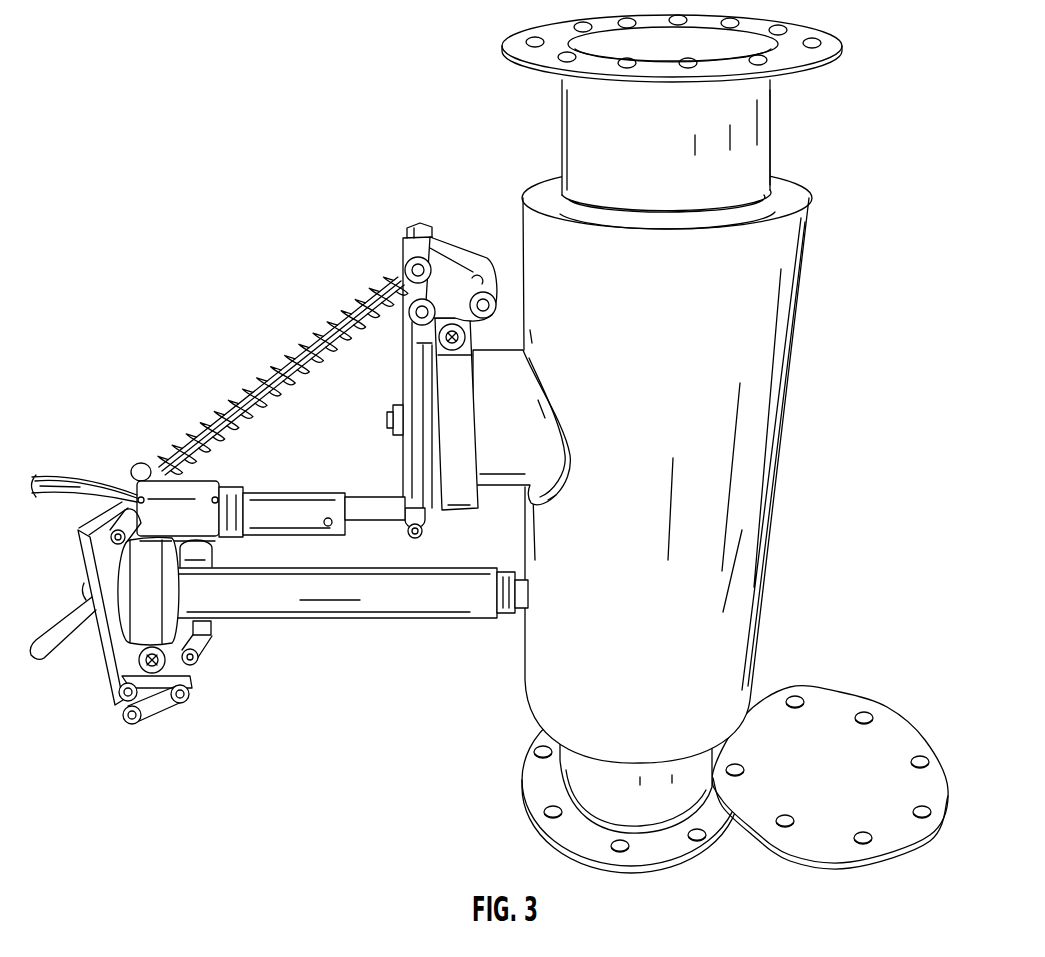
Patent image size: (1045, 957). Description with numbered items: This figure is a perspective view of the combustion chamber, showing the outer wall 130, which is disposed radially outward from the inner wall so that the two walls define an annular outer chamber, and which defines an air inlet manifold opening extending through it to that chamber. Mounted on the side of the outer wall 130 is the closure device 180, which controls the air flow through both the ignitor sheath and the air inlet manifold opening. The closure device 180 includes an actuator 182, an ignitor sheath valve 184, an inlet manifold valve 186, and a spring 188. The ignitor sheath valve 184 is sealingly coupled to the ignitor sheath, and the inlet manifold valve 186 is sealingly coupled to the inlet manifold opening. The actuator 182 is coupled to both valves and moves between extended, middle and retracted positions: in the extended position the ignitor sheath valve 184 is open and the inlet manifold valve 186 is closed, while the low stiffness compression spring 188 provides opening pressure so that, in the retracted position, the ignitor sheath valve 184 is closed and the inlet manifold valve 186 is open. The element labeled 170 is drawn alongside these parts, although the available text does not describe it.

The outer wall 130 is at (760, 344).
The cylinder 170 is at (323, 640).
The closure device 180 is at (263, 483).
The actuator 182 is at (177, 488).
The ignitor sheath valve 184 is at (85, 658).
The inlet manifold valve 186 is at (393, 244).
The spring 188 is at (360, 300).